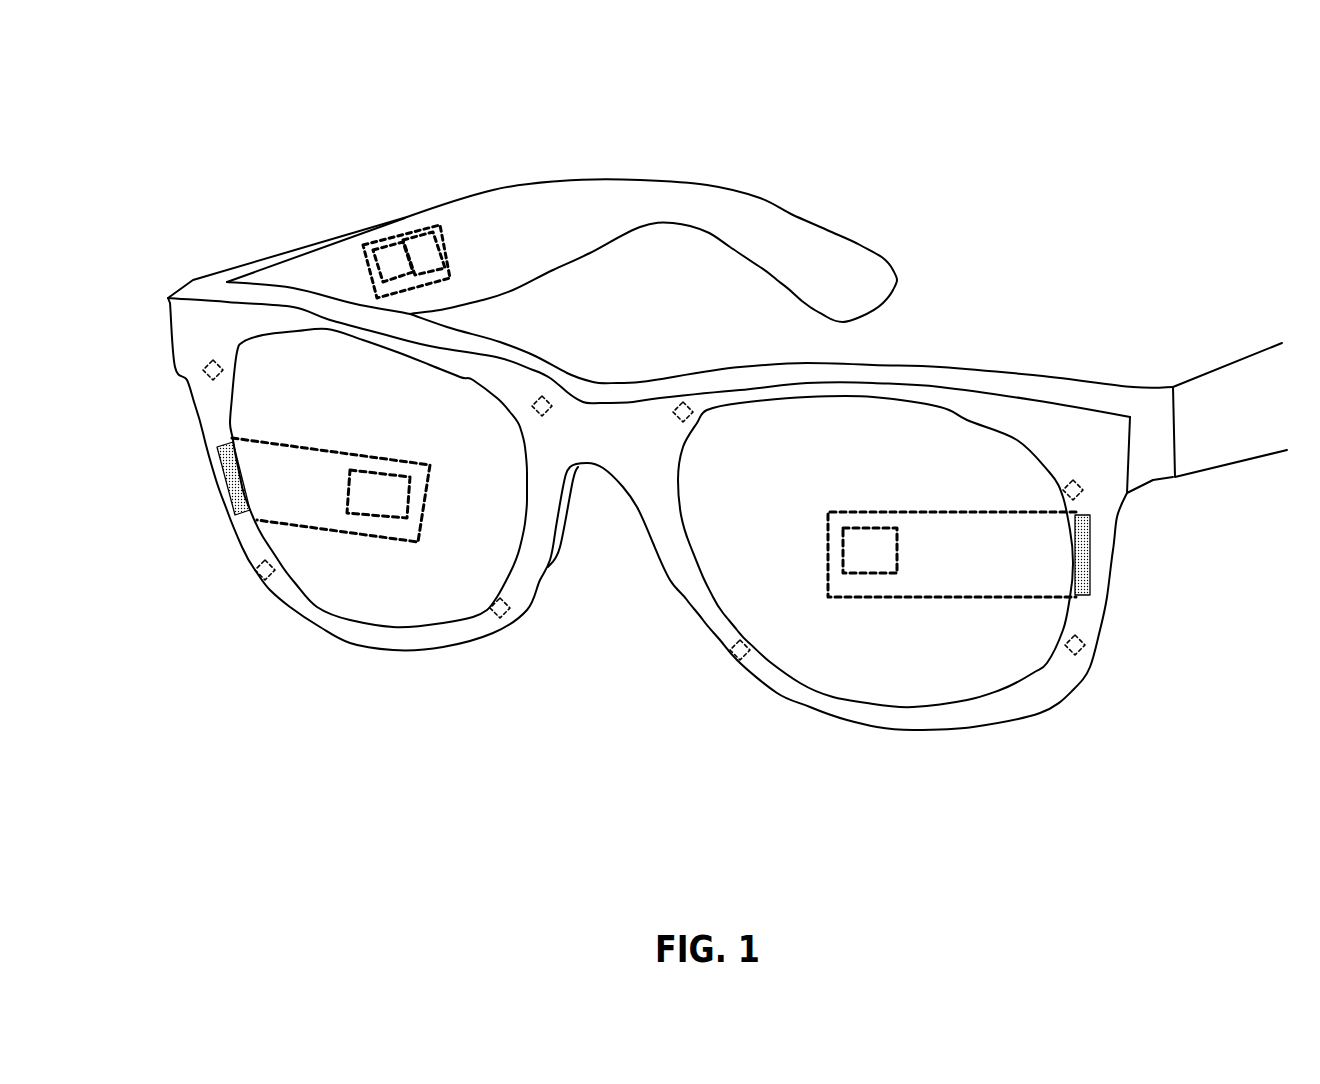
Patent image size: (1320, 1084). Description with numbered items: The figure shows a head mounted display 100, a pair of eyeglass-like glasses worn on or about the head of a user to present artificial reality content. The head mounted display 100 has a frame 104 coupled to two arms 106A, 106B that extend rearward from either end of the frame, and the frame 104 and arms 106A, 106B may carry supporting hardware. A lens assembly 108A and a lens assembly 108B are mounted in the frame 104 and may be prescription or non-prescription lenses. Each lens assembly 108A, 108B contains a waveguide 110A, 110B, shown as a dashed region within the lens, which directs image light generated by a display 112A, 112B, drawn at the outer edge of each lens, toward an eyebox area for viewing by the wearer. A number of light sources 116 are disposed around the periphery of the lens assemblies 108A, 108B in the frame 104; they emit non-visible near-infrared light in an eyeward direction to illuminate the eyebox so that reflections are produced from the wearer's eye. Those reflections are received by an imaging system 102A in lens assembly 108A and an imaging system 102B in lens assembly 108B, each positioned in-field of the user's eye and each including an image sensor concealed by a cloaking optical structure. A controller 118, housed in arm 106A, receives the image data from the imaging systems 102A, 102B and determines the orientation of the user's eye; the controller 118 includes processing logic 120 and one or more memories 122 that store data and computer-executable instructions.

The head mounted display 100 is at (727, 385).
The imaging system 102A is at (380, 517).
The imaging system 102B is at (847, 548).
The frame 104 is at (610, 436).
The arm 106A is at (592, 224).
The arm 106B is at (1250, 427).
The lens assembly 108A is at (397, 398).
The lens assembly 108B is at (890, 447).
The waveguide 110A is at (425, 502).
The waveguide 110B is at (970, 597).
The display 112A is at (230, 487).
The display 112B is at (1093, 560).
The light sources 116 is at (245, 377).
The controller 118 is at (450, 252).
The processing logic 120 is at (427, 260).
The memories 122 is at (387, 268).